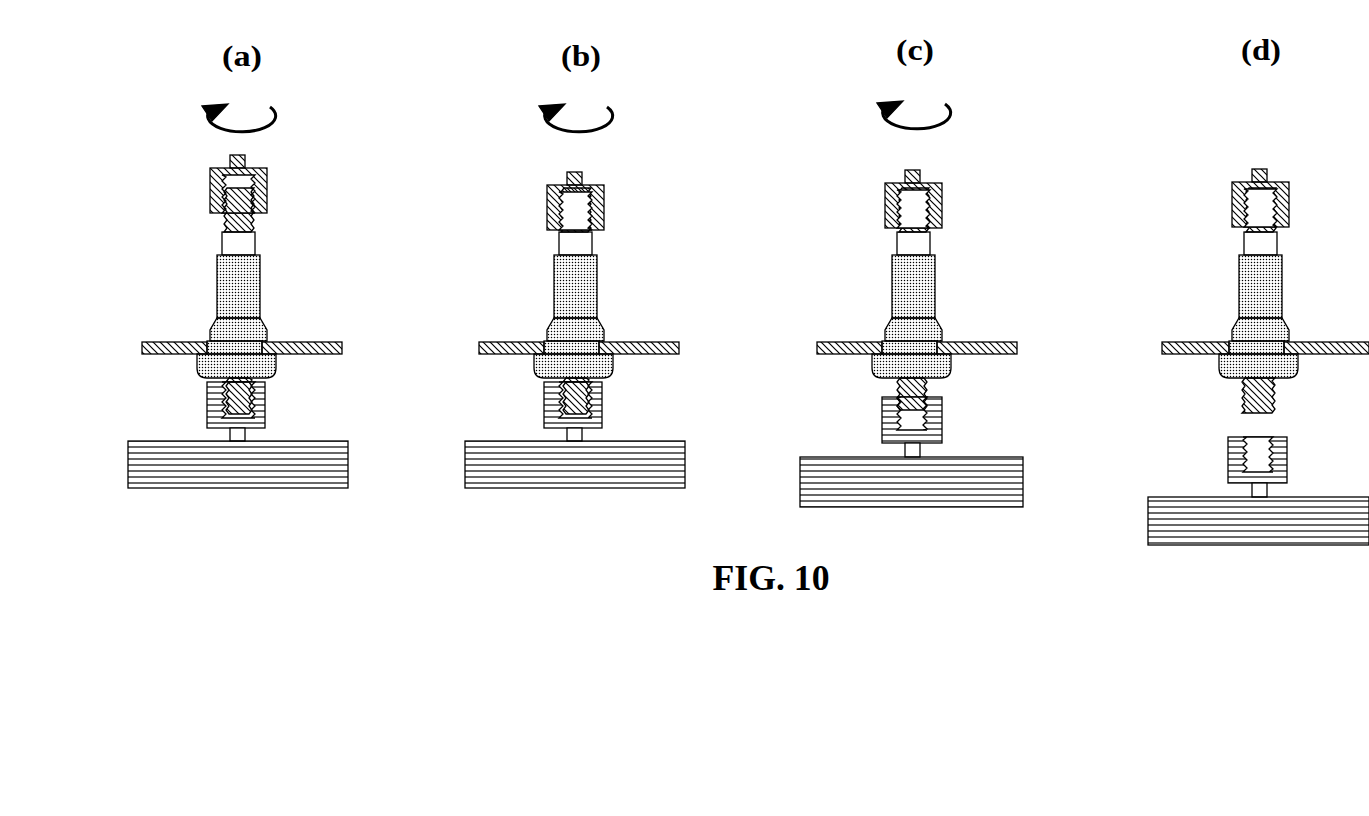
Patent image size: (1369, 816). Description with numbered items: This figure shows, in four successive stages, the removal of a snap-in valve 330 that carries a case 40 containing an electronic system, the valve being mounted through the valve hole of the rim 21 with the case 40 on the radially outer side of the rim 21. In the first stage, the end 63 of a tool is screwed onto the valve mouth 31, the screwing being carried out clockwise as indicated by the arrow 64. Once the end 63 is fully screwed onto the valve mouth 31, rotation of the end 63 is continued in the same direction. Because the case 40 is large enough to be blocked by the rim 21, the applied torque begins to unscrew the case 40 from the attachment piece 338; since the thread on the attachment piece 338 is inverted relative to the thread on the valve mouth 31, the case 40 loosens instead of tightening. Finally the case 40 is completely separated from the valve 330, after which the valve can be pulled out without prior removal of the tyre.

The valve 330 is at (172, 244).
The arrow 64 is at (272, 115).
The end of tool 63 is at (267, 186).
The valve mouth 31 is at (252, 222).
The rim 21 is at (319, 341).
The attachment piece 338 is at (926, 383).
The case 40 is at (348, 462).